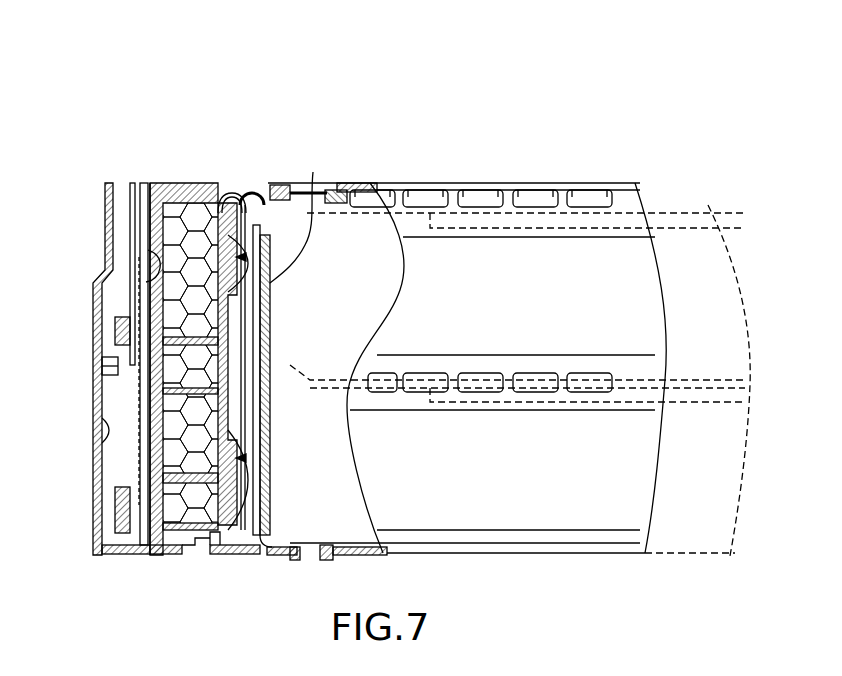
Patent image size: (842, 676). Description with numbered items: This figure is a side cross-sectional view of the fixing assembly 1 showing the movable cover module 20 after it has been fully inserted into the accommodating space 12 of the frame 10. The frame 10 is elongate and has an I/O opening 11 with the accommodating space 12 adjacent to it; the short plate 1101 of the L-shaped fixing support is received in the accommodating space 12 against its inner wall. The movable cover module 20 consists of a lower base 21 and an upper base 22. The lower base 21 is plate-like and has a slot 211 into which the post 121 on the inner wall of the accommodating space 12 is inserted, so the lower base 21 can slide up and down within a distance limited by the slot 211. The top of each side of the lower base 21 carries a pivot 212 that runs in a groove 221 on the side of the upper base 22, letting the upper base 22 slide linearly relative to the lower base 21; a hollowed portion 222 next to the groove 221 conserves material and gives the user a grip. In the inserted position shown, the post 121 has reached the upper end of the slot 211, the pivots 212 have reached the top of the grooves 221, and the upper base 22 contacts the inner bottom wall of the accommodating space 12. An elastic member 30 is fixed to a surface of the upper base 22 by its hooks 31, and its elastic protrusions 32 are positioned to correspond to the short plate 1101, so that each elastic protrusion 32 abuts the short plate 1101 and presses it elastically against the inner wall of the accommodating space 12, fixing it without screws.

The fixing assembly 1 is at (370, 48).
The frame 10 is at (548, 178).
The I/O opening 11 is at (486, 180).
The short plate 1101 is at (323, 174).
The accommodating space 12 is at (238, 545).
The post 121 is at (100, 368).
The movable cover module 20 is at (170, 180).
The lower base 21 is at (112, 330).
The slot 211 is at (105, 450).
The pivot 212 is at (148, 263).
The upper base 22 is at (200, 183).
The groove 221 is at (140, 283).
The hollowed portion 222 is at (150, 187).
The elastic member 30 is at (247, 195).
The hook 31 is at (215, 195).
The elastic protrusion 32 is at (262, 230).